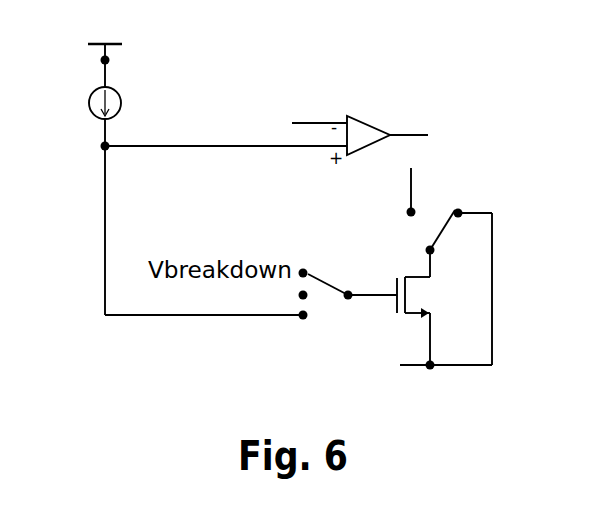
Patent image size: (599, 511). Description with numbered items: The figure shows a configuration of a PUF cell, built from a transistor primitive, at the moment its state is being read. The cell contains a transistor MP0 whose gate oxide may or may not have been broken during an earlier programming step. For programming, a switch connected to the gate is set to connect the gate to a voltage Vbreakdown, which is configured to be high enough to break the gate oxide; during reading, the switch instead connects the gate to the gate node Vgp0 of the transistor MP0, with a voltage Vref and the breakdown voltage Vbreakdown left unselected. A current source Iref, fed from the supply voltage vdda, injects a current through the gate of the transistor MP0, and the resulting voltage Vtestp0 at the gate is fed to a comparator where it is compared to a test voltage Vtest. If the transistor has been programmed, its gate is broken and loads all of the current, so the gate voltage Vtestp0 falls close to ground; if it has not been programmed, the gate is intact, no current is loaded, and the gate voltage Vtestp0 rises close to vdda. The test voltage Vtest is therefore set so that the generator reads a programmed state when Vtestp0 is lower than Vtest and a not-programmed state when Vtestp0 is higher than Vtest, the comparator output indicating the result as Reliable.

The supply voltage vdda is at (104, 50).
The reference current source Iref is at (82, 103).
The test voltage Vtest is at (315, 108).
The comparator reliable output Reliable is at (432, 122).
The breakdown voltage Vbreakdown is at (335, 192).
The transistor MP0 is at (432, 307).
The gate voltage node Vgp0 is at (352, 280).
The reference voltage Vref is at (277, 297).
The gate voltage Vtestp0 is at (222, 329).